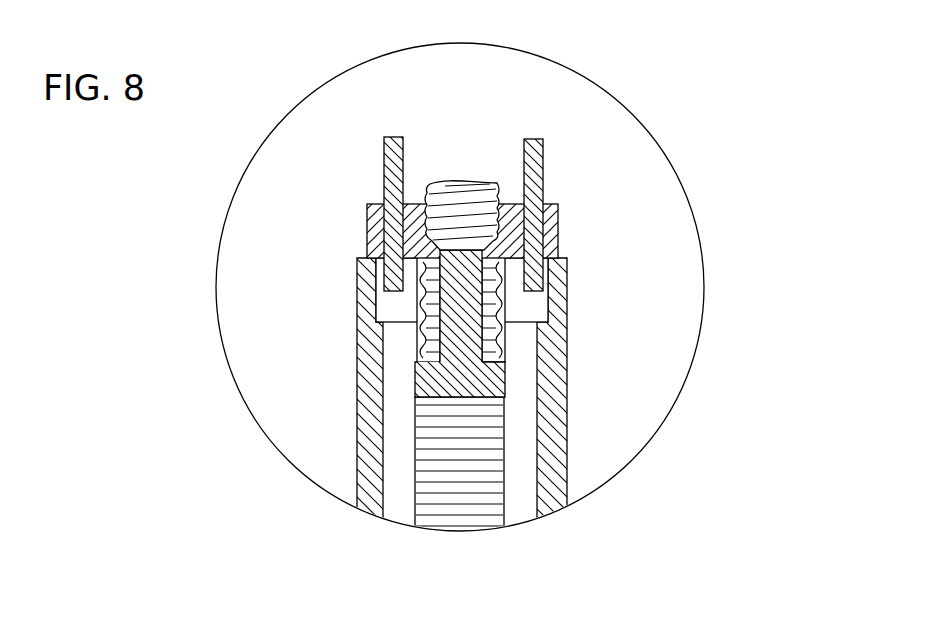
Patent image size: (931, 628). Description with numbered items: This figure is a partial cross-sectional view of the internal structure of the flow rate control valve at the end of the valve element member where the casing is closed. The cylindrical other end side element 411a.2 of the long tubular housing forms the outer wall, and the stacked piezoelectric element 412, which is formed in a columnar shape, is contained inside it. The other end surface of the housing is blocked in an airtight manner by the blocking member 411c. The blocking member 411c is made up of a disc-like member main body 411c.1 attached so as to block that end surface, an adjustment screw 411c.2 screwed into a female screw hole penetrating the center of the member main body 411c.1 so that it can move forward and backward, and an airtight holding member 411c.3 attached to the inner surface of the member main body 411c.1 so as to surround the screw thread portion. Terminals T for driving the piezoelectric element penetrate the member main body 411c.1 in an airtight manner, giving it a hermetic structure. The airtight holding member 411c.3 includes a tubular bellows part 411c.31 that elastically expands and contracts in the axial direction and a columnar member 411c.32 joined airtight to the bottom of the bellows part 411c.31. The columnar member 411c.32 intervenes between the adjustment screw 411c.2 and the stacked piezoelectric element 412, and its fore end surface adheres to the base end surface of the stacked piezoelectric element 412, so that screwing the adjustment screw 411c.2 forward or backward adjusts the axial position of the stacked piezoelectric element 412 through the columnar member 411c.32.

The terminals T is at (393, 137).
The blocking member 411c is at (413, 243).
The member main body 411c.1 is at (367, 232).
The adjustment screw 411c.2 is at (455, 181).
The airtight holding member 411c.3 is at (351, 323).
The bellows part 411c.31 is at (418, 324).
The columnar member 411c.32 is at (417, 382).
The other end side element 411a.2 is at (567, 358).
The stacked piezoelectric element 412 is at (415, 452).